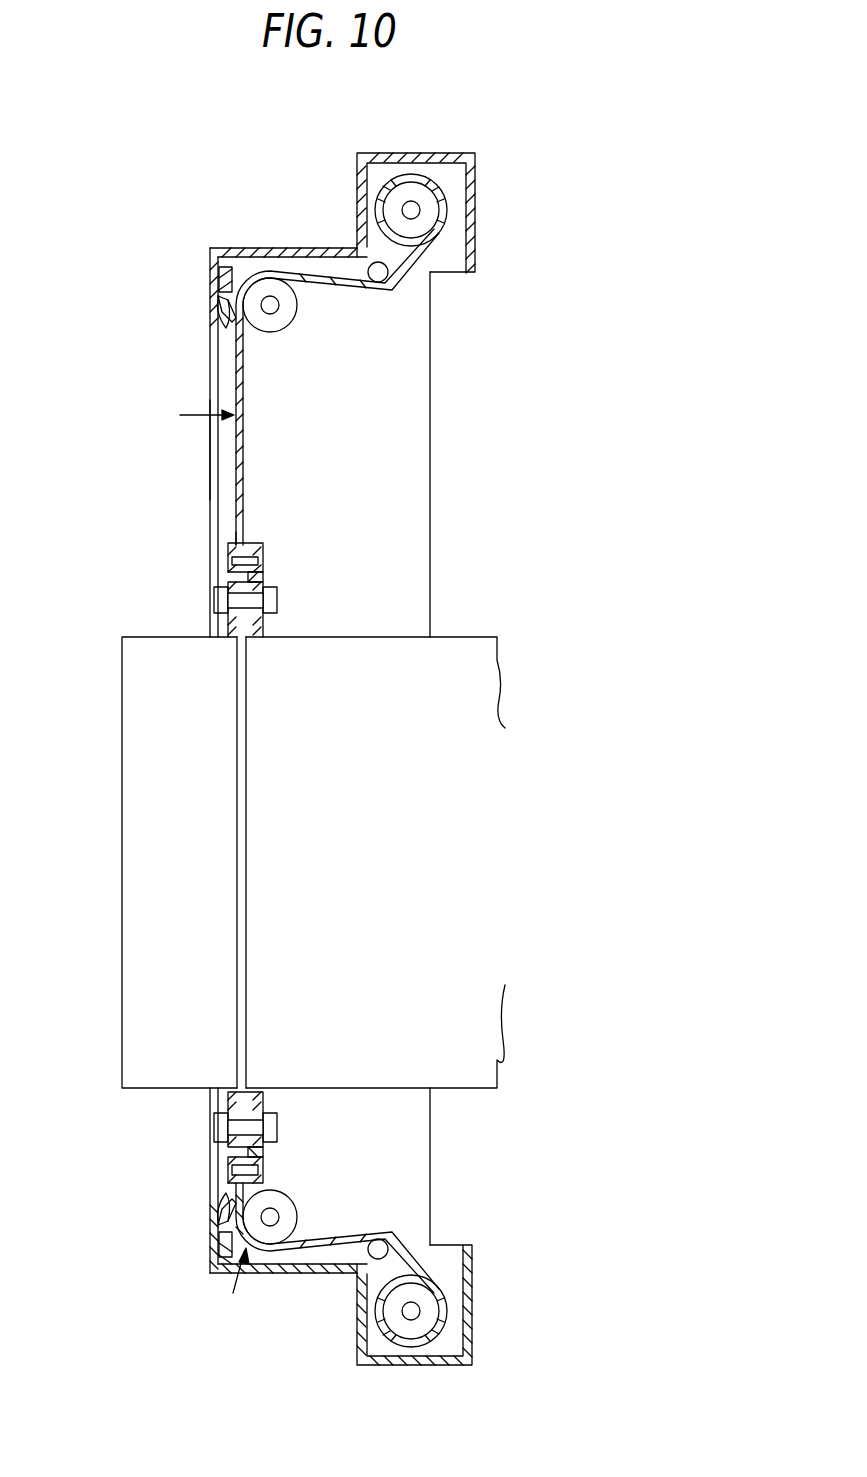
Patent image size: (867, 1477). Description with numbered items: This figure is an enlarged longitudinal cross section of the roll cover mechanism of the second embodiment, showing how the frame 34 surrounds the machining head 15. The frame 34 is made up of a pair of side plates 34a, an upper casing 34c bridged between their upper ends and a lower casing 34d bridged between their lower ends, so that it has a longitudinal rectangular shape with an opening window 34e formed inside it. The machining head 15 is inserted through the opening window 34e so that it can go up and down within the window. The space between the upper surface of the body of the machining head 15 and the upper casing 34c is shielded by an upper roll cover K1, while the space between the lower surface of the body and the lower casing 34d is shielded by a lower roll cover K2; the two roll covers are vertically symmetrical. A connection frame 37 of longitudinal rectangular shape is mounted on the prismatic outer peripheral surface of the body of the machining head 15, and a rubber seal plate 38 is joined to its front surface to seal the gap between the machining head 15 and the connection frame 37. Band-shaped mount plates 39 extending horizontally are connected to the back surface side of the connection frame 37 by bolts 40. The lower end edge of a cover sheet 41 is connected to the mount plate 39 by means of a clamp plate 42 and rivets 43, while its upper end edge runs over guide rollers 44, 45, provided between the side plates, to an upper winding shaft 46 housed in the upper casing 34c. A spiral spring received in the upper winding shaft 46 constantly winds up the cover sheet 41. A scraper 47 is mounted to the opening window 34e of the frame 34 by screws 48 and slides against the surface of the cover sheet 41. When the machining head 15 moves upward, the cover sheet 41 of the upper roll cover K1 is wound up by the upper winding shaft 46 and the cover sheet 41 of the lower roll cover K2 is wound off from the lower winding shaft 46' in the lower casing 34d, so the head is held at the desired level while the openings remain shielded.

The machining head 15 is at (137, 756).
The frame 34 is at (275, 738).
The side plate 34a is at (216, 470).
The upper casing 34c is at (387, 155).
The lower casing 34d is at (273, 1274).
The opening window 34e is at (216, 302).
The connection frame 37 is at (248, 795).
The rubber seal plate 38 is at (214, 597).
The mount plate 39 is at (264, 577).
The bolt 40 is at (272, 600).
The cover sheet 41 is at (244, 448).
The clamp plate 42 is at (243, 540).
The rivet 43 is at (264, 553).
The guide roller 44 is at (275, 325).
The guide roller 45 is at (378, 283).
The upper winding shaft 46 is at (448, 210).
The lower winding shaft 46' is at (373, 1311).
The scraper 47 is at (213, 330).
The screw 48 is at (212, 270).
The upper roll cover K1 is at (191, 415).
The lower roll cover K2 is at (231, 1285).